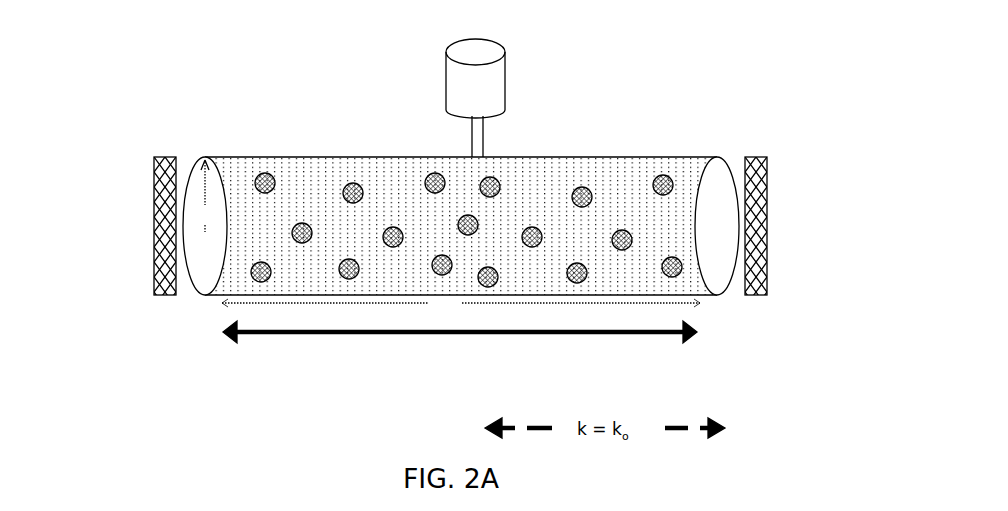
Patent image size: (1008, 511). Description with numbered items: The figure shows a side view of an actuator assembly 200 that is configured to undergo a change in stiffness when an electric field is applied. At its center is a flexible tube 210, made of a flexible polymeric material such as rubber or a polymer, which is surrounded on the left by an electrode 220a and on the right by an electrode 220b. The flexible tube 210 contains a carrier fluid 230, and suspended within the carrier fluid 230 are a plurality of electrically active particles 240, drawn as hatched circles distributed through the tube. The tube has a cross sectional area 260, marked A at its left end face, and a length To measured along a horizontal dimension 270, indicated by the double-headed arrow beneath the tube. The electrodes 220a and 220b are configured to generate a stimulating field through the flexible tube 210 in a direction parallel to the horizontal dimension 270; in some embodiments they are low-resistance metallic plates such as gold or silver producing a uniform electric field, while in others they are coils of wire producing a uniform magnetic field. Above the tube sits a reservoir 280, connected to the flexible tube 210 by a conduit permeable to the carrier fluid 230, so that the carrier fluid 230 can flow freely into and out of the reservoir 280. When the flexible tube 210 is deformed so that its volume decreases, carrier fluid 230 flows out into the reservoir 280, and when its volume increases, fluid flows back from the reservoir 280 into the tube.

The actuator assembly 200 is at (76, 28).
The flexible tube 210 is at (408, 157).
The electrode 220a is at (158, 237).
The electrode 220b is at (767, 227).
The carrier fluid 230 is at (607, 165).
The electrically active particles 240 is at (352, 279).
The cross sectional area 260 is at (206, 172).
The horizontal dimension 270 is at (574, 351).
The reservoir 280 is at (505, 50).